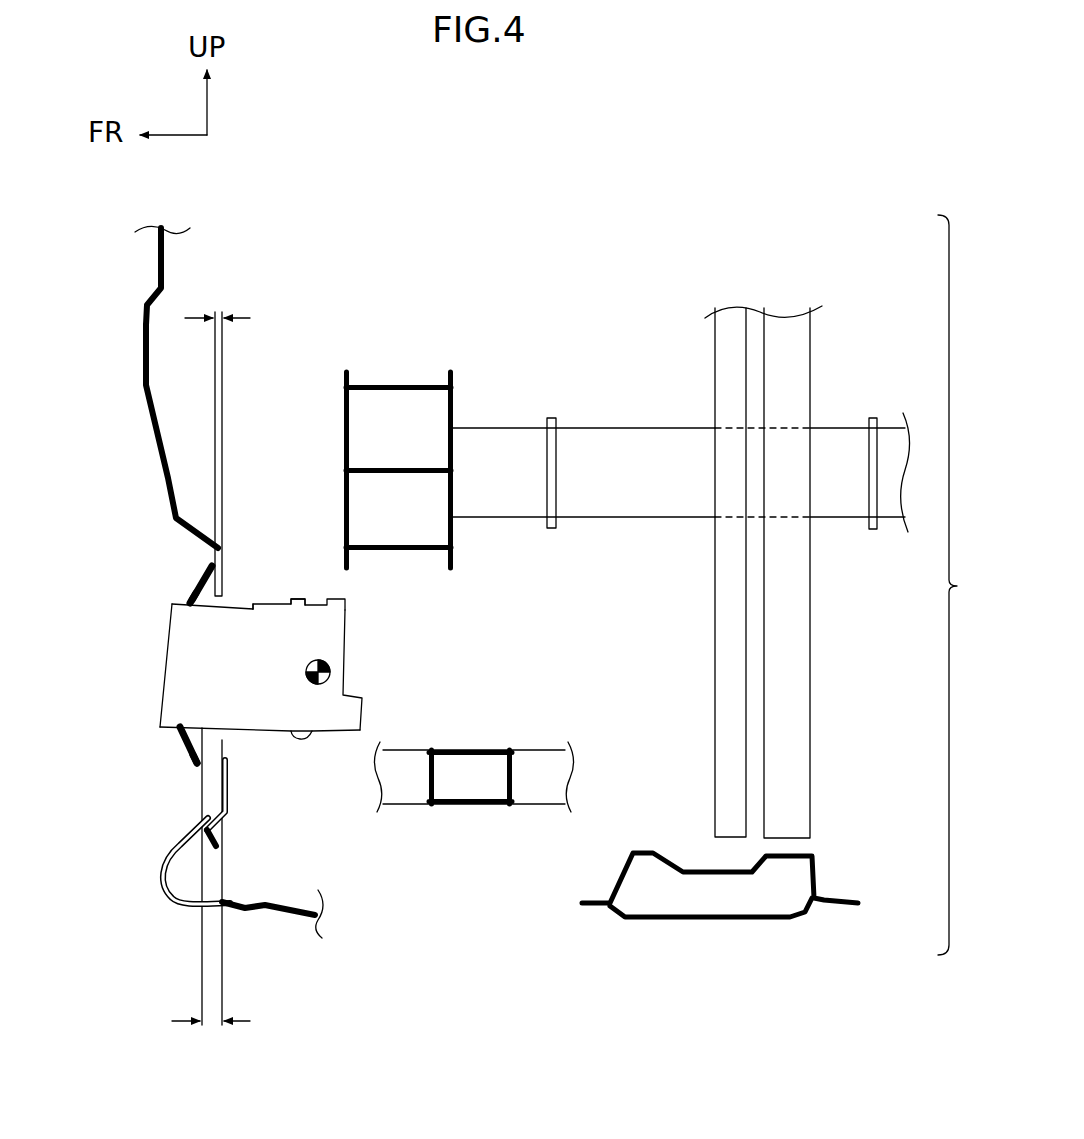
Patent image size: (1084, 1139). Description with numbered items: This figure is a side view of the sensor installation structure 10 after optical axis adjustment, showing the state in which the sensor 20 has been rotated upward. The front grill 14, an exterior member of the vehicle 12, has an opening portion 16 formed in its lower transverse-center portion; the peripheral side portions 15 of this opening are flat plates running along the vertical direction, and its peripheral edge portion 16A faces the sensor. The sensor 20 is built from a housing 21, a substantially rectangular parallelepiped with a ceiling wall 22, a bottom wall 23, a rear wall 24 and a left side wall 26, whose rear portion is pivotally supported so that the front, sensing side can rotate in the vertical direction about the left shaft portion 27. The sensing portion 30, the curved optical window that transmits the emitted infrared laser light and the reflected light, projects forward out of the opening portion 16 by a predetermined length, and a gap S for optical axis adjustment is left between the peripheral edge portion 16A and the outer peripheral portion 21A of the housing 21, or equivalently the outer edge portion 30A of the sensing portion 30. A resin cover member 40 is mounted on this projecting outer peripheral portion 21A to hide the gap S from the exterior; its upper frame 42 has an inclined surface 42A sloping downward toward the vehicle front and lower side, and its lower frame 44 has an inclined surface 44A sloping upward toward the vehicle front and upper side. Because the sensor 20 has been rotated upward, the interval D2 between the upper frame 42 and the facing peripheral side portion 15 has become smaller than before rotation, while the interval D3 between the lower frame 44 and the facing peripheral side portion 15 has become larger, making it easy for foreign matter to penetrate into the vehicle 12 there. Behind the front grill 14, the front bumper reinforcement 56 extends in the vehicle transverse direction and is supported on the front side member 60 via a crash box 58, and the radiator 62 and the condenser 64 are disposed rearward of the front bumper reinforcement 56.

The sensor installation structure 10 is at (130, 693).
The vehicle 12 is at (130, 275).
The front grill 14 is at (150, 363).
The peripheral side portion 15 is at (232, 790).
The opening portion 16 is at (235, 755).
The peripheral edge portion 16A is at (225, 594).
The sensor 20 is at (284, 636).
The housing 21 is at (357, 607).
The outer peripheral portion 21A is at (272, 600).
The ceiling wall 22 is at (270, 600).
The bottom wall 23 is at (275, 735).
The rear wall 24 is at (350, 640).
The left side wall 26 is at (280, 692).
The left shaft portion 27 is at (305, 672).
The sensing portion 30 is at (163, 675).
The outer edge portion 30A is at (175, 604).
The cover member 40 is at (185, 762).
The upper frame 42 is at (200, 580).
The inclined surface 42A is at (195, 590).
The lower frame 44 is at (190, 788).
The inclined surface 44A is at (178, 755).
The front bumper reinforcement 56 is at (392, 385).
The crash box 58 is at (625, 452).
The front side member 60 is at (895, 440).
The radiator 62 is at (713, 363).
The condenser 64 is at (812, 640).
The gap S is at (228, 737).
The interval D2 is at (220, 316).
The interval D3 is at (210, 1022).